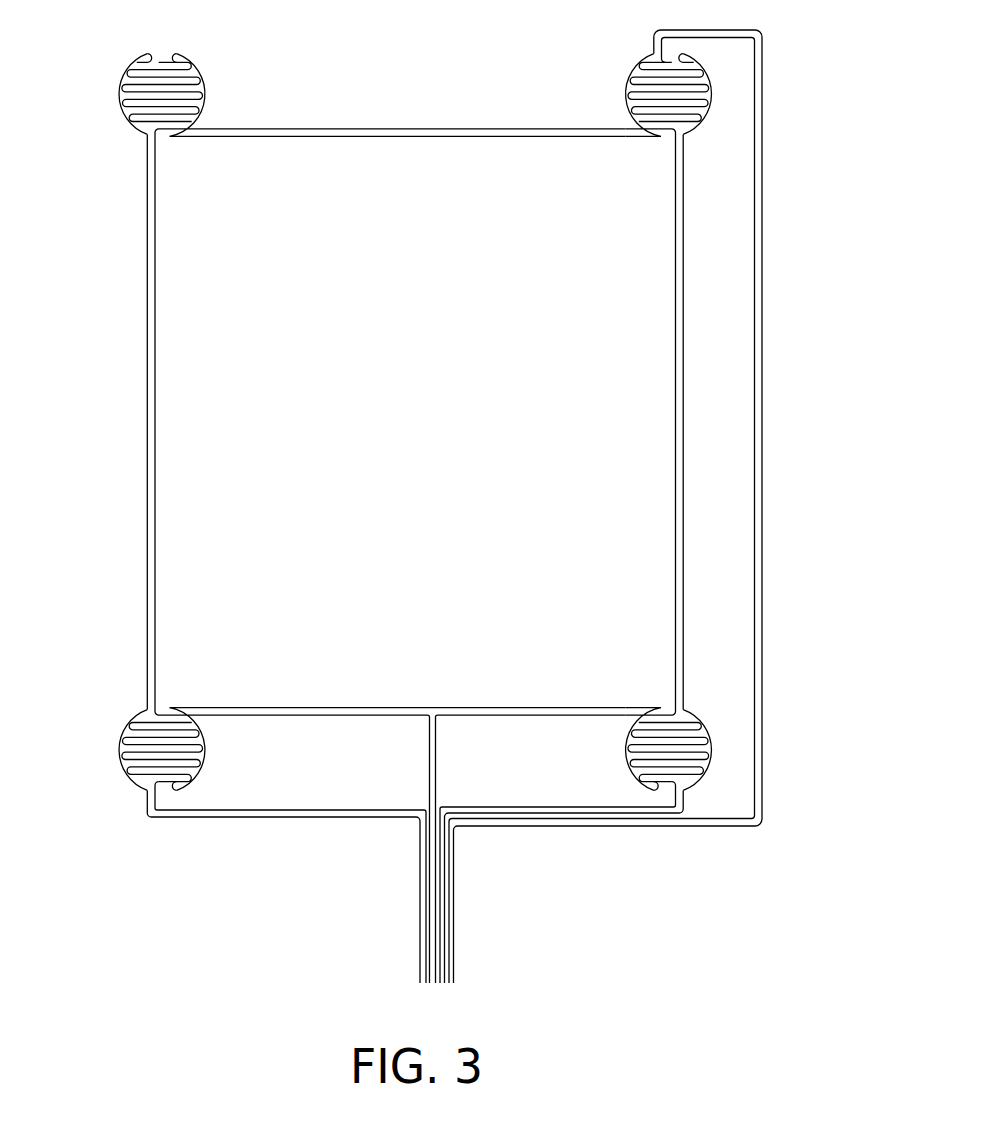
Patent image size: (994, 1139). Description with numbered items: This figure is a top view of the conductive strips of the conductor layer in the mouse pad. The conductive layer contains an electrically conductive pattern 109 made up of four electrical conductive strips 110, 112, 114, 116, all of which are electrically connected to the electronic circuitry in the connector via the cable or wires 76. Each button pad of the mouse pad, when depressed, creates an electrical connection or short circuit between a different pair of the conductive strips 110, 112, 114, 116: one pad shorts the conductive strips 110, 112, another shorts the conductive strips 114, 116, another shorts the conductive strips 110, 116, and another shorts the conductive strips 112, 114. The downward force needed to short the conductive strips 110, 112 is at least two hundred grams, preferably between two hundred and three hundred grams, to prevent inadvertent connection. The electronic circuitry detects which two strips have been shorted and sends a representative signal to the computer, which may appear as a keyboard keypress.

The electrically conductive pattern 109 is at (800, 142).
The conductive strip 114 is at (275, 127).
The conductive strip 116 is at (148, 223).
The conductive strip 112 is at (675, 578).
The conductive strip 110 is at (505, 707).
The cable or wires 76 is at (453, 944).